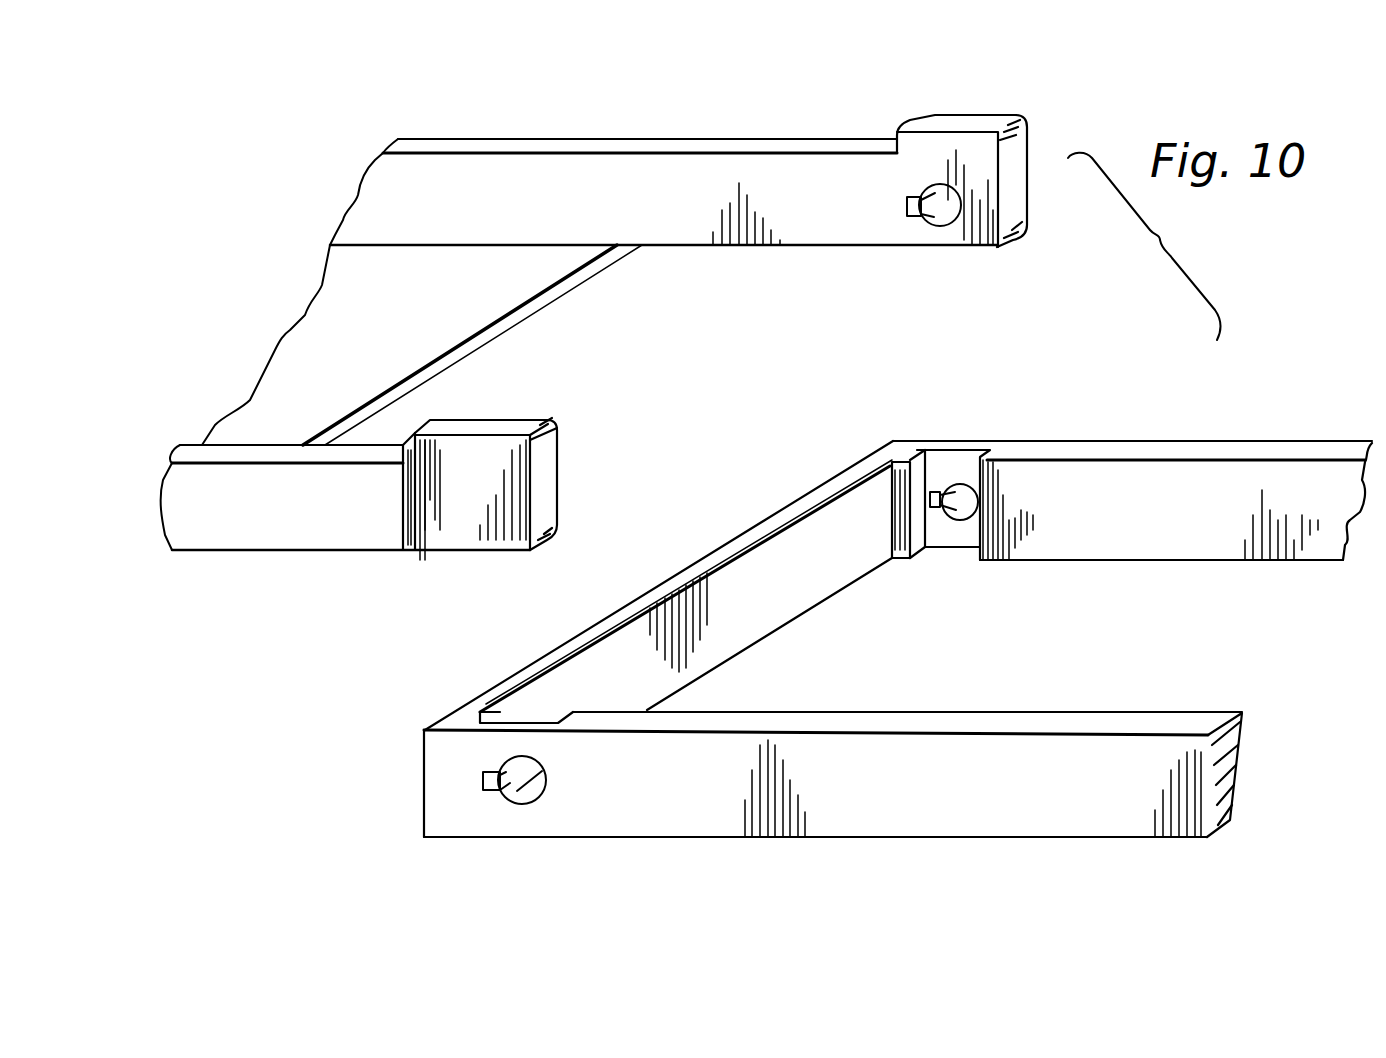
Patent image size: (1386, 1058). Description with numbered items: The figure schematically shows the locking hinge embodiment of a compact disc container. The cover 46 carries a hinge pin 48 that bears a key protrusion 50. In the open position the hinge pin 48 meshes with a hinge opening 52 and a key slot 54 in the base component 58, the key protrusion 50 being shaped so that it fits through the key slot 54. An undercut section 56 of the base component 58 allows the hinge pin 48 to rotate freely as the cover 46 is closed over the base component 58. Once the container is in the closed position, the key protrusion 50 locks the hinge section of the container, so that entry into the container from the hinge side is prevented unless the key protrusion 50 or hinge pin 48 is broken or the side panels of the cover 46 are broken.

The cover 46 is at (542, 313).
The hinge pin 48 is at (1000, 245).
The key protrusion 50 is at (920, 216).
The hinge opening 52 is at (548, 782).
The key slot 54 is at (483, 785).
The undercut section 56 is at (920, 472).
The base component 58 is at (424, 742).